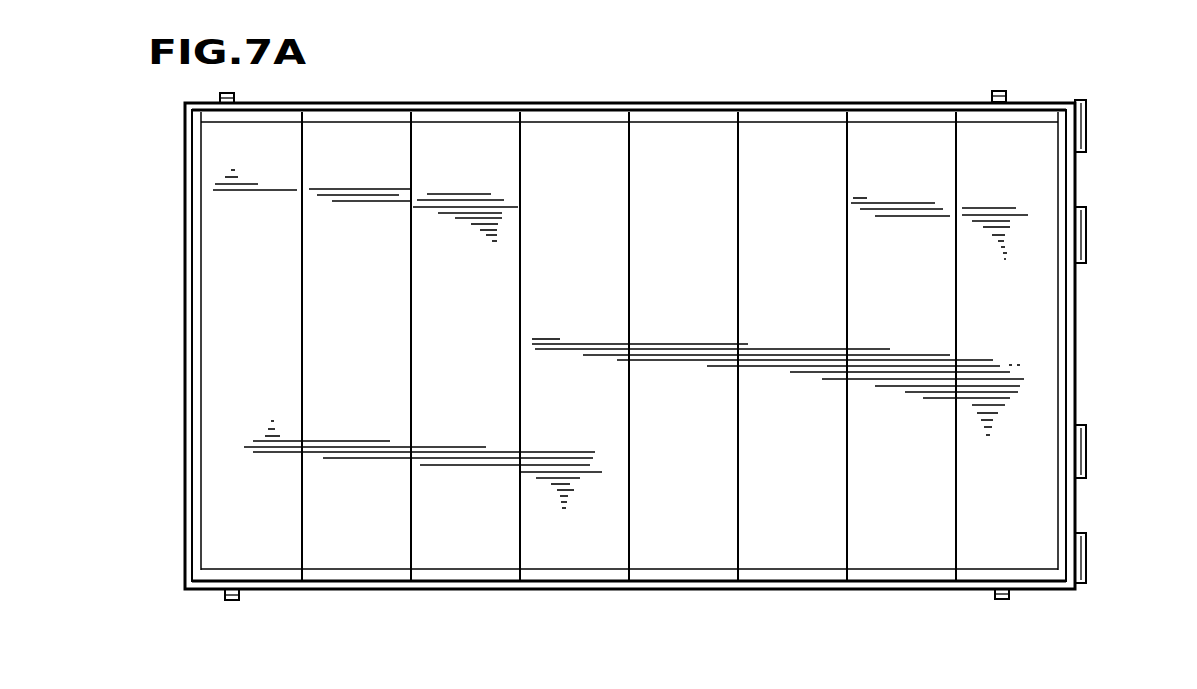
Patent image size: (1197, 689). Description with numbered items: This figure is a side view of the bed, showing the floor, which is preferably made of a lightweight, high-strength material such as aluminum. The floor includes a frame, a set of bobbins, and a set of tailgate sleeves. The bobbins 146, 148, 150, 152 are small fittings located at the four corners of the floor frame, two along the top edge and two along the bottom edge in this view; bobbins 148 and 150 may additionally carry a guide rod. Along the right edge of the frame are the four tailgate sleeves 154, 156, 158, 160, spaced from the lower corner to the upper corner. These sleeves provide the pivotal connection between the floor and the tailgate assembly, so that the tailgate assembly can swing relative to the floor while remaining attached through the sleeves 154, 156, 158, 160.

The bobbin 146 is at (239, 600).
The bobbin 148 is at (1007, 599).
The bobbin 150 is at (1002, 91).
The bobbin 152 is at (234, 97).
The tailgate sleeve 154 is at (1086, 566).
The tailgate sleeve 156 is at (1086, 452).
The tailgate sleeve 158 is at (1086, 248).
The tailgate sleeve 160 is at (1086, 142).